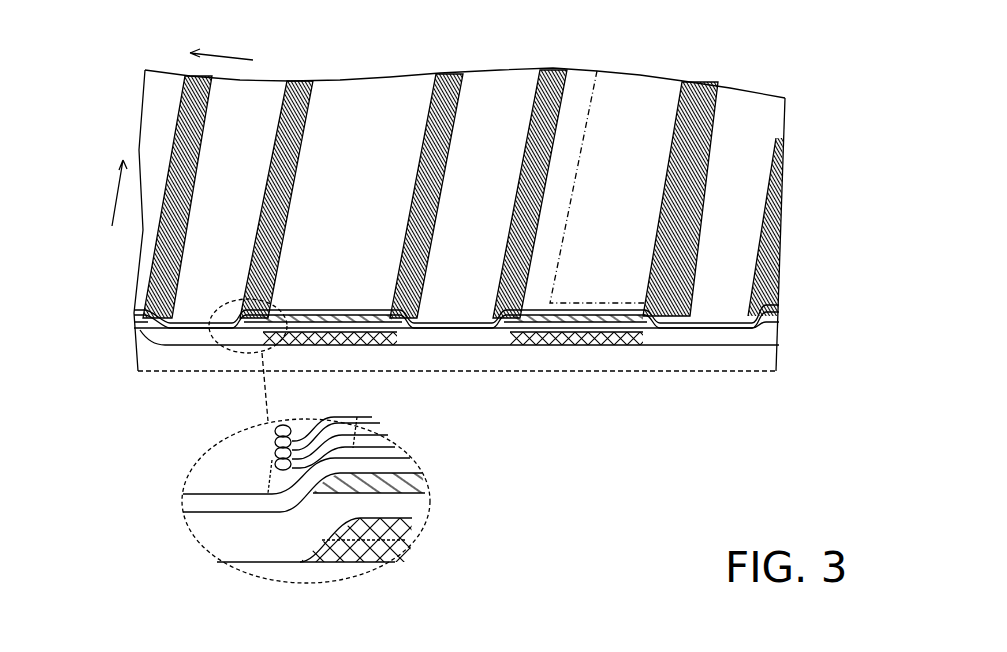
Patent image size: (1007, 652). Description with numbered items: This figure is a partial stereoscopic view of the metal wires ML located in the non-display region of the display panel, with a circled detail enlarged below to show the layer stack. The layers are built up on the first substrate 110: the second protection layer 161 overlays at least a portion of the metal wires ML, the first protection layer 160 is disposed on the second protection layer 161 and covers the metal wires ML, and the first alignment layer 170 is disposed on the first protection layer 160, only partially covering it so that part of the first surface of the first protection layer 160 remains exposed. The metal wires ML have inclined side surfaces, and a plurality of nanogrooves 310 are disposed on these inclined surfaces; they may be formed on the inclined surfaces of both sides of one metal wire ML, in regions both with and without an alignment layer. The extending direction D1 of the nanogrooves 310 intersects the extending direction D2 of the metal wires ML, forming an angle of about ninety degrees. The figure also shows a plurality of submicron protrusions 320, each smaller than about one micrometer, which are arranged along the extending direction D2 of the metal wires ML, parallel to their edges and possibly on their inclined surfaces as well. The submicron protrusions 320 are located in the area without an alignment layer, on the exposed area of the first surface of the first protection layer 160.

The first substrate 110 is at (768, 357).
The first protection layer 160 is at (775, 313).
The second protection layer 161 is at (770, 327).
The first alignment layer 170 is at (777, 305).
The nanogrooves 310 is at (141, 326).
The submicron protrusions 320 is at (295, 80).
The metal wires ML is at (292, 344).
The extending direction of the nanogrooves D1 is at (224, 46).
The extending direction of the metal wires D2 is at (103, 193).